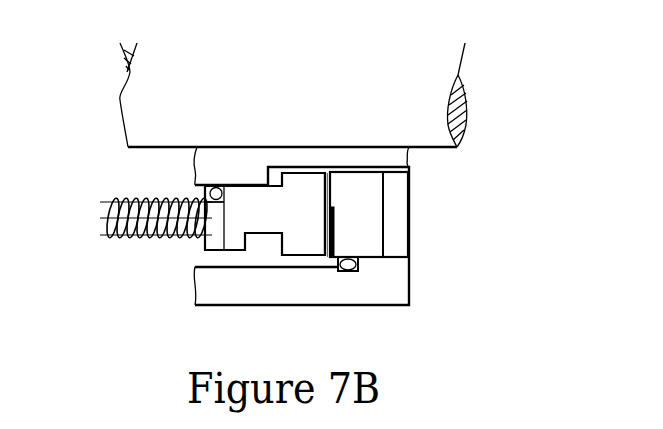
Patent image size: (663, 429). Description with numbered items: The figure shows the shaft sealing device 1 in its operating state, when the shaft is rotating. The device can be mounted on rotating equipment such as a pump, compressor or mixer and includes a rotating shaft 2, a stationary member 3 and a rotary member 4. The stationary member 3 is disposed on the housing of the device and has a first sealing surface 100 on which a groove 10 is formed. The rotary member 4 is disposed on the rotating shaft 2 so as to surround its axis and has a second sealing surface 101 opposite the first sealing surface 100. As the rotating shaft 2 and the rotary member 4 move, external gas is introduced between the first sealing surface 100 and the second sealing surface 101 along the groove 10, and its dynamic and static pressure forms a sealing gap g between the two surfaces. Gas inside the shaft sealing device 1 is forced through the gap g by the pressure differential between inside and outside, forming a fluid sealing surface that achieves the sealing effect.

The shaft sealing device 1 is at (557, 47).
The rotating shaft 2 is at (450, 60).
The first sealing surface 100 is at (332, 185).
The stationary member 3 is at (373, 225).
The groove 10 is at (333, 230).
The sealing gap g is at (328, 258).
The rotary member 4 is at (265, 220).
The second sealing surface 101 is at (325, 195).